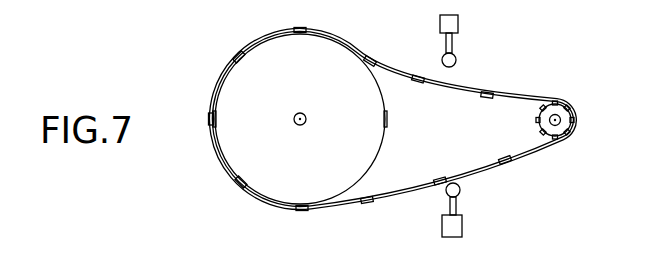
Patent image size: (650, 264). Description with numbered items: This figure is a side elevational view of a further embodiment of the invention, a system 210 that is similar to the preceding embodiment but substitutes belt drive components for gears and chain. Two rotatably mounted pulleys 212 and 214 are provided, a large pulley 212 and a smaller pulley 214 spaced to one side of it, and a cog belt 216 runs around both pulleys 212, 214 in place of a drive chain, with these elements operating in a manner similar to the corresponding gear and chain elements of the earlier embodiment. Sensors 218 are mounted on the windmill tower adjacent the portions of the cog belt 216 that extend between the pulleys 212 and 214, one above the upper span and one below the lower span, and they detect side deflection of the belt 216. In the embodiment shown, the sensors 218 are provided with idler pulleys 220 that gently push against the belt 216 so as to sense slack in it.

The system 210 is at (306, 17).
The pulley 212 is at (262, 90).
The pulley 214 is at (564, 98).
The cog belt 216 is at (413, 76).
The sensors 218 is at (458, 25).
The idler pulleys 220 is at (456, 60).